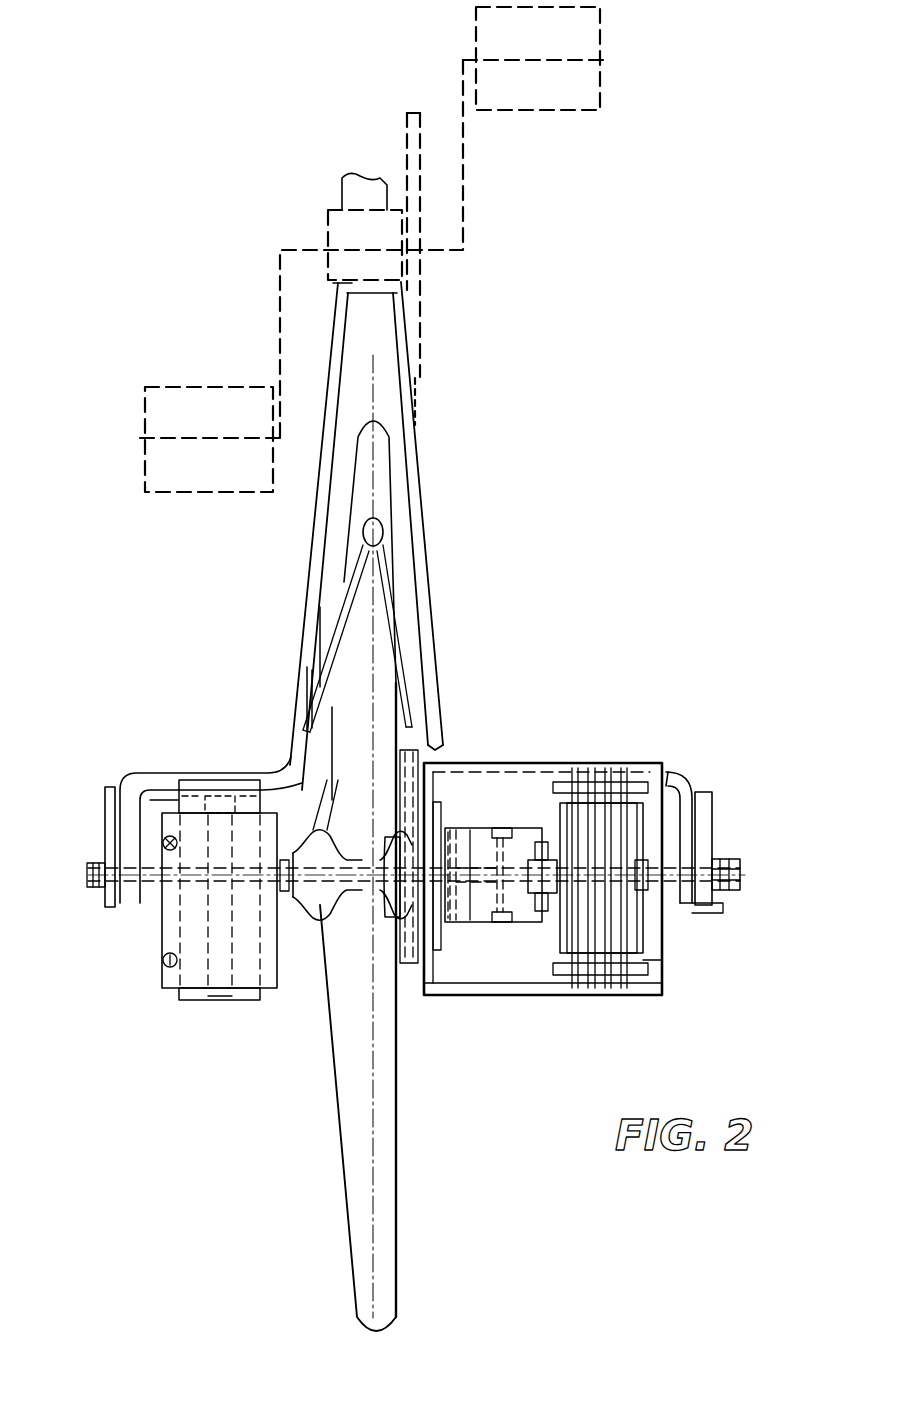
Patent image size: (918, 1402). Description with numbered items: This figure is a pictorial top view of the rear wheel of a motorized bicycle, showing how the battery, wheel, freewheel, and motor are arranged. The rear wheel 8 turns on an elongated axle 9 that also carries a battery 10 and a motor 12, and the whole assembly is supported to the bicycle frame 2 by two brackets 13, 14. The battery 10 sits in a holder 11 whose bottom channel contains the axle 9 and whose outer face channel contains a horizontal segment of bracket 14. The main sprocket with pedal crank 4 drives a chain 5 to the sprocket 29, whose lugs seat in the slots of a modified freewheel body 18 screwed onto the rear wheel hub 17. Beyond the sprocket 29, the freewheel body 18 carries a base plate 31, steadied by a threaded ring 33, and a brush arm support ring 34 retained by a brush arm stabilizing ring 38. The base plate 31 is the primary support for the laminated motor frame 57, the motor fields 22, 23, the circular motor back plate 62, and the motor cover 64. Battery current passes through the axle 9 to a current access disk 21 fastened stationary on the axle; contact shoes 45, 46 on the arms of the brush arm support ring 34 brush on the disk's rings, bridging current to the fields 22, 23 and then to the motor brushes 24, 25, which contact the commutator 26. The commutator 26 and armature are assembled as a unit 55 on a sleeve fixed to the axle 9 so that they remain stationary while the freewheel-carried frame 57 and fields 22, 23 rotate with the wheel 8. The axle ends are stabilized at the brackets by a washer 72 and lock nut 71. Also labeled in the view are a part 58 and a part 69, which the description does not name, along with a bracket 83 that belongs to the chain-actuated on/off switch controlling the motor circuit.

The frame 2 is at (427, 533).
The main sprocket with pedal crank 4 is at (436, 317).
The chain 5 is at (418, 403).
The rear wheel 8 is at (320, 1226).
The elongated axle 9 is at (742, 877).
The battery 10 is at (165, 961).
The holder 11 is at (236, 975).
The motor 12 is at (477, 1005).
The bracket 13 is at (697, 777).
The bracket 14 is at (162, 772).
The rear wheel hub 17 is at (336, 856).
The freewheel body 18 is at (462, 993).
The current access disk 21 is at (524, 745).
The motor field 22 is at (640, 763).
The motor field 23 is at (668, 978).
The motor brush 24 is at (547, 838).
The motor brush 25 is at (535, 913).
The commutator 26 is at (547, 915).
The sprocket 29 is at (408, 942).
The base plate 31 is at (418, 970).
The ring 33 is at (421, 984).
The brush arm support ring 34 is at (453, 824).
The brush arm stabilizing ring 38 is at (473, 828).
The contact shoe 45 is at (520, 771).
The contact shoe 46 is at (513, 930).
The commutator and armature unit 55 is at (670, 932).
The motor frame 57 is at (607, 763).
The gear box 58 is at (504, 815).
The motor back plate 62 is at (668, 963).
The motor cover 64 is at (595, 995).
The mounting bracket 69 is at (722, 801).
The lock nut 71 is at (298, 855).
The washer 72 is at (716, 853).
The bracket 83 is at (373, 297).